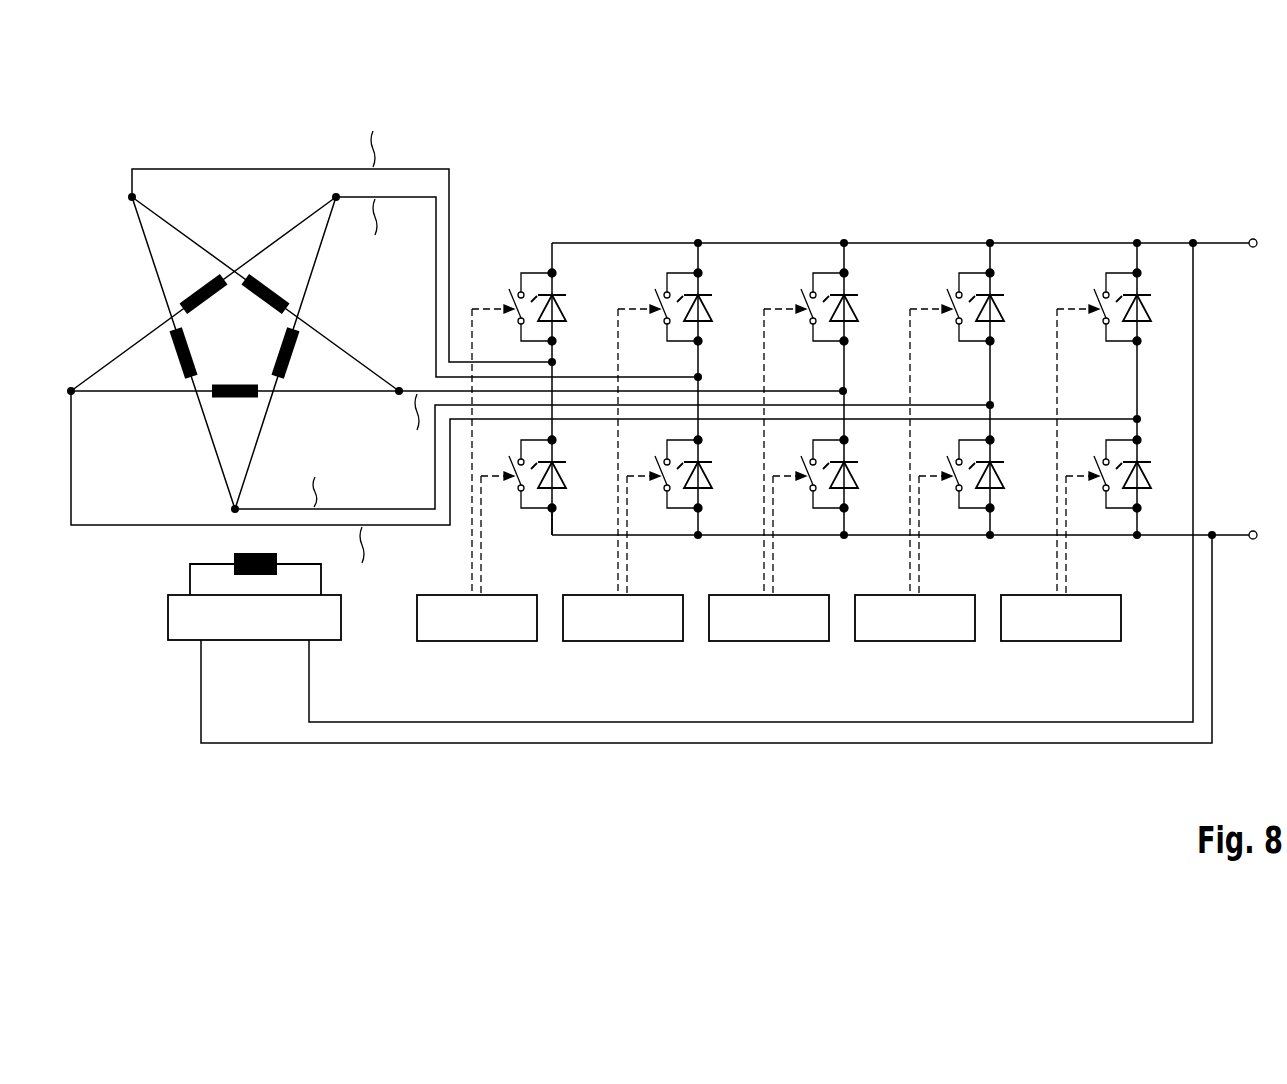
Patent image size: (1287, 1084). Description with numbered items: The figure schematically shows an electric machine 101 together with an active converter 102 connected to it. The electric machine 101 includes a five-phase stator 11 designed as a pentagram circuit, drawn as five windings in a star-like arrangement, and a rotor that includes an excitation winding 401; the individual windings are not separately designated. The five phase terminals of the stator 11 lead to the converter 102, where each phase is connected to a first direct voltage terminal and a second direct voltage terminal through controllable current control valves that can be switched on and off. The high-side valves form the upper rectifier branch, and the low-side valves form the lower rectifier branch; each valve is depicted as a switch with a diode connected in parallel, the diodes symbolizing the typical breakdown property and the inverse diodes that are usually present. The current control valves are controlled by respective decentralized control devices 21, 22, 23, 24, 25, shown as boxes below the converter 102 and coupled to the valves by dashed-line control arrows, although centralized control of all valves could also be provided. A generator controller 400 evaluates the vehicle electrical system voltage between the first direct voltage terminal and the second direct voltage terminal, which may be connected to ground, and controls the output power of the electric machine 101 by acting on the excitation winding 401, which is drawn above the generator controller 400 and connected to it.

The five-phase stator 11 is at (242, 246).
The electric machine 101 is at (474, 223).
The active converter 102 is at (1106, 191).
The decentralized control device 21 is at (478, 642).
The decentralized control device 22 is at (624, 642).
The decentralized control device 23 is at (770, 642).
The decentralized control device 24 is at (916, 642).
The decentralized control device 25 is at (1062, 642).
The generator controller 400 is at (168, 619).
The excitation winding 401 is at (168, 556).